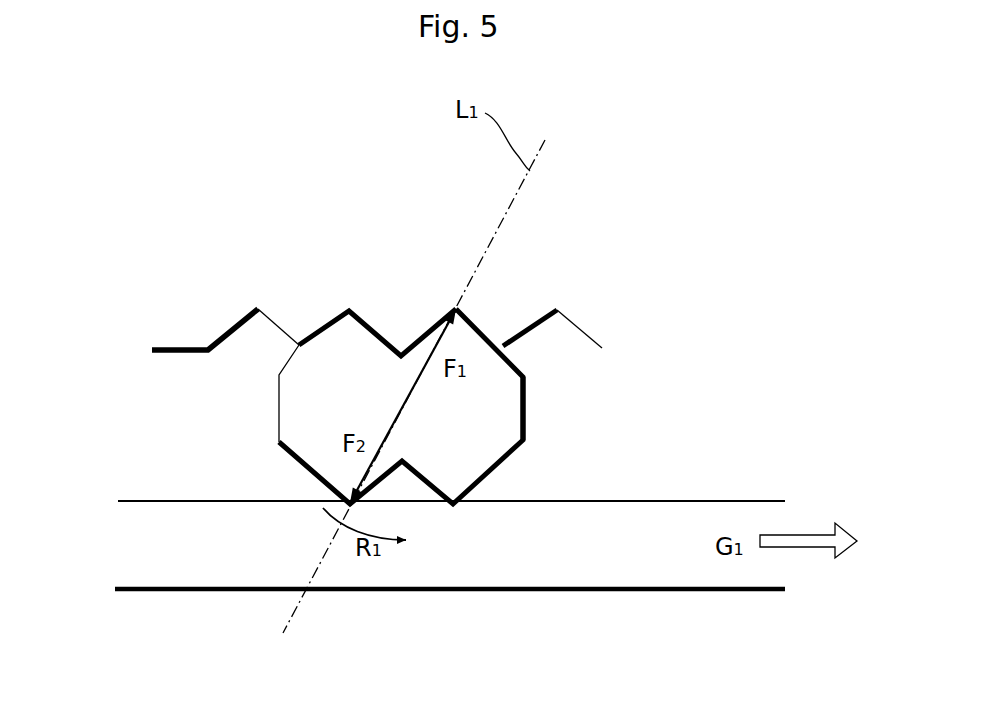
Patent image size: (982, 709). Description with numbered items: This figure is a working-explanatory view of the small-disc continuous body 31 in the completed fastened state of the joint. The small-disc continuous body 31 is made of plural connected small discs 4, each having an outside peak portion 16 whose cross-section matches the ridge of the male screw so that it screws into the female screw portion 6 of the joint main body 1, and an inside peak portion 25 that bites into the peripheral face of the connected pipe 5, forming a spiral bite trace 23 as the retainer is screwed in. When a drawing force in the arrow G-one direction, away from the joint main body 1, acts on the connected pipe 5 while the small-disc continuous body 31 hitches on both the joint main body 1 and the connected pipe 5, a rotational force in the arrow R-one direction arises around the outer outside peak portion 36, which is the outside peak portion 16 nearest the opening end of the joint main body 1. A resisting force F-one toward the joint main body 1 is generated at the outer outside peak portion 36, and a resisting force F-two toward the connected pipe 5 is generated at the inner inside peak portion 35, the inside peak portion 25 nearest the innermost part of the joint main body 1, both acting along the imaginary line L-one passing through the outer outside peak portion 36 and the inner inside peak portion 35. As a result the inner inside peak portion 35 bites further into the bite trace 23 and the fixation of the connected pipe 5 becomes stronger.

The joint main body 1 is at (177, 355).
The small disc 4 is at (277, 423).
The connected pipe 5 is at (696, 500).
The female screw portion 6 is at (274, 328).
The outside peak portion 16 is at (349, 312).
The outer outside peak portion 36 is at (457, 310).
The bite trace 23 is at (343, 498).
The inside peak portion 25 is at (457, 506).
The inner inside peak portion 35 is at (351, 505).
The small-disc continuous body 31 is at (528, 415).